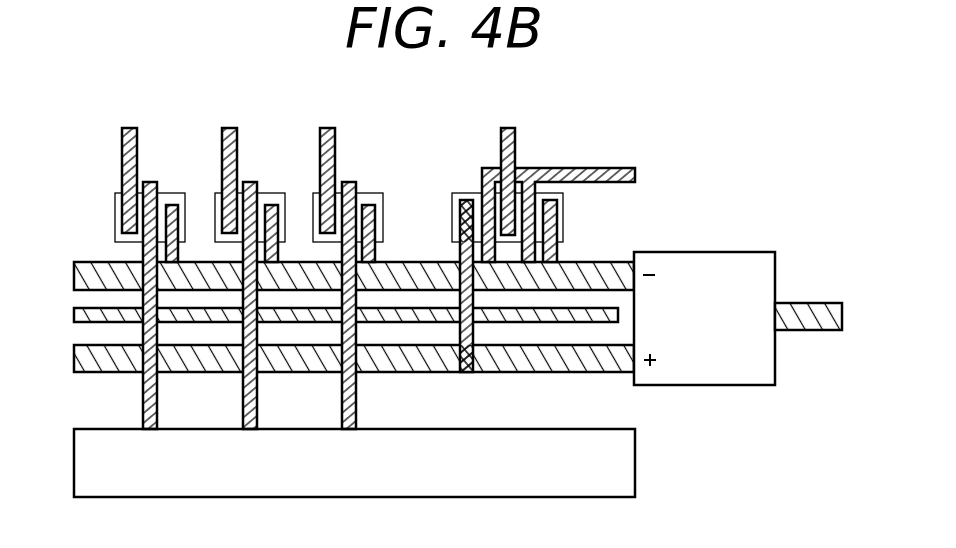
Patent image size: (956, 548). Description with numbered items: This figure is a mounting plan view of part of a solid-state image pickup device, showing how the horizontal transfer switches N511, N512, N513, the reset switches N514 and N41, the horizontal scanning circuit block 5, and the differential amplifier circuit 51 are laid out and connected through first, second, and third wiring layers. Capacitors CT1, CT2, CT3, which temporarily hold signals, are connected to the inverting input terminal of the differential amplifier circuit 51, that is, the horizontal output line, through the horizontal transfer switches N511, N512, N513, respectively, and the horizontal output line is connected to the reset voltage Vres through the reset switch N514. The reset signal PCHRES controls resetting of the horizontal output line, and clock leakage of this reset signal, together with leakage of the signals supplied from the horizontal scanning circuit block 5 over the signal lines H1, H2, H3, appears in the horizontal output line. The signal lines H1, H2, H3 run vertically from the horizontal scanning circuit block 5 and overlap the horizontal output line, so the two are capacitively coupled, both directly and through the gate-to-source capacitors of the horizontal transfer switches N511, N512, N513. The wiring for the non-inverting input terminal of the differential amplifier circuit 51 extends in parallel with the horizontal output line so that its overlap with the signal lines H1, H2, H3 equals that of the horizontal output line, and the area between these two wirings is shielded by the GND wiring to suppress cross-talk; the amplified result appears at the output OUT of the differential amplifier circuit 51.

The horizontal scanning circuit block 5 is at (635, 447).
The differential amplifier circuit 51 is at (737, 385).
The horizontal transfer switch N511 is at (161, 296).
The horizontal transfer switch N512 is at (262, 296).
The horizontal transfer switch N513 is at (361, 296).
The reset switch N514 is at (583, 223).
The reset switch N41 is at (501, 268).
The capacitor CT1 is at (128, 166).
The capacitor CT2 is at (228, 166).
The capacitor CT3 is at (327, 166).
The reset voltage Vres is at (508, 167).
The reset signal PCHRES is at (607, 213).
The GND wiring GND is at (320, 314).
The output terminal OUT is at (836, 316).
The signal line H1 is at (150, 448).
The signal line H2 is at (250, 448).
The signal line H3 is at (352, 448).